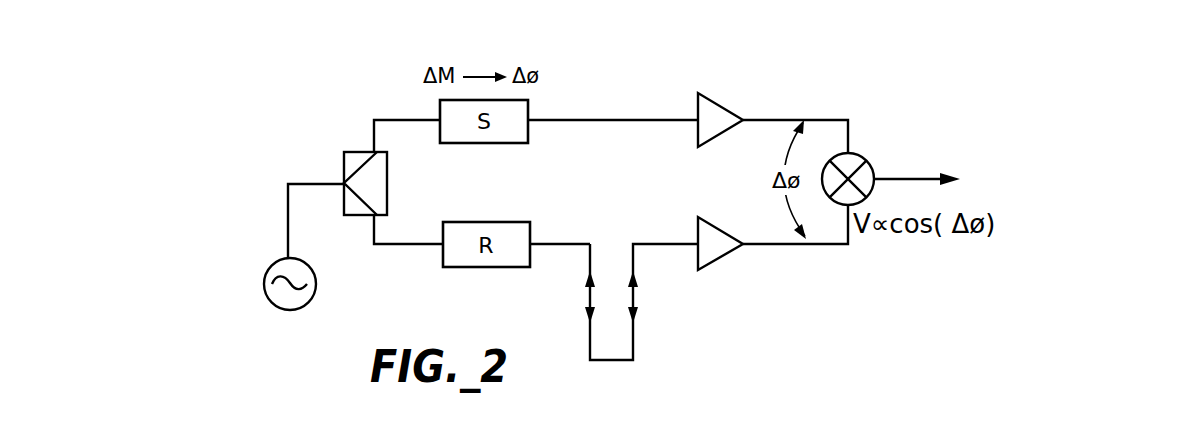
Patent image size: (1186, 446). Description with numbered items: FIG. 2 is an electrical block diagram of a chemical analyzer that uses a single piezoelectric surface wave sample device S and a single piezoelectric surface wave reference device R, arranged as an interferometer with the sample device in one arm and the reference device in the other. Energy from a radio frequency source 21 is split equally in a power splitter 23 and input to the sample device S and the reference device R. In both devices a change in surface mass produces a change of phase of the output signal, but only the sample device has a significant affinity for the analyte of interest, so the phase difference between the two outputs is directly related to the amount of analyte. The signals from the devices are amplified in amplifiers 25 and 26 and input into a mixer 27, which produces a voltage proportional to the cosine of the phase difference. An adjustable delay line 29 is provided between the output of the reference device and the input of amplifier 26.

The radio frequency source 21 is at (313, 291).
The power splitter 23 is at (356, 152).
The amplifier 25 is at (697, 132).
The amplifier 26 is at (697, 228).
The mixer 27 is at (857, 152).
The adjustable delay line 29 is at (652, 298).